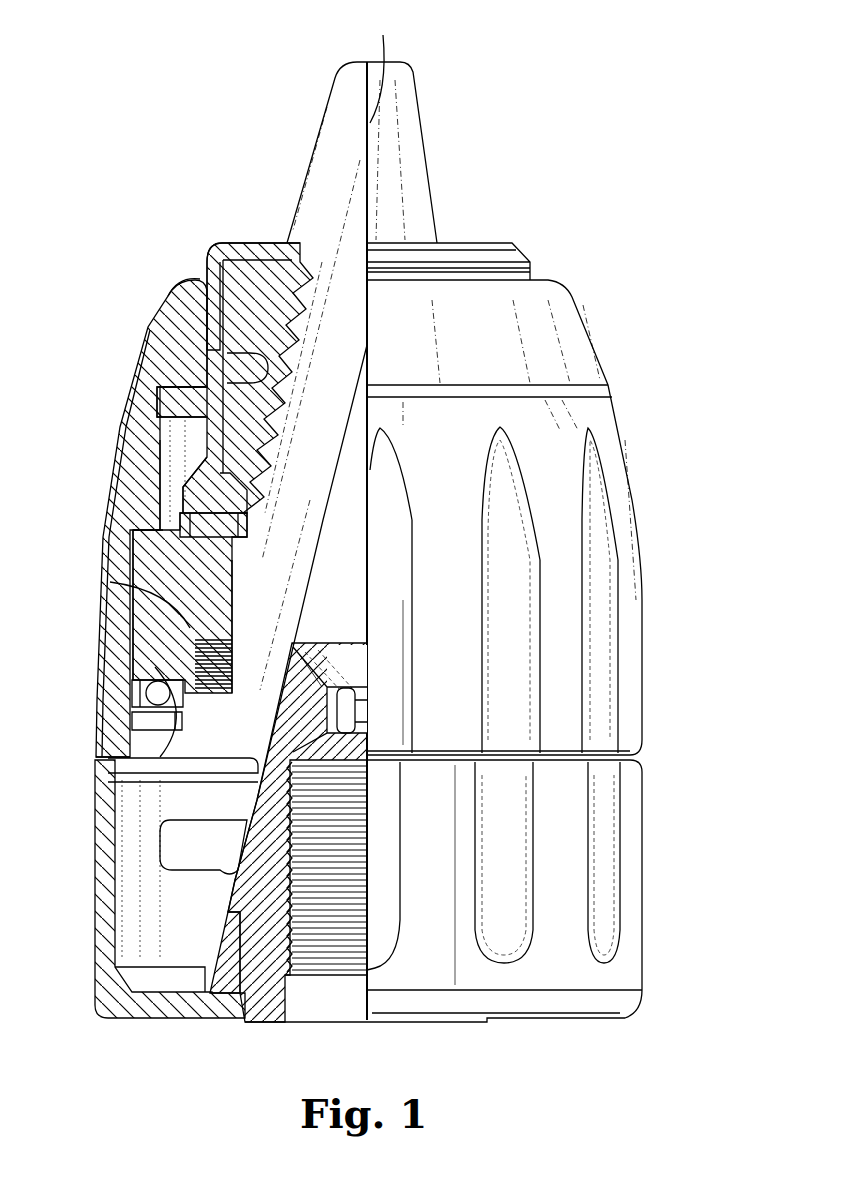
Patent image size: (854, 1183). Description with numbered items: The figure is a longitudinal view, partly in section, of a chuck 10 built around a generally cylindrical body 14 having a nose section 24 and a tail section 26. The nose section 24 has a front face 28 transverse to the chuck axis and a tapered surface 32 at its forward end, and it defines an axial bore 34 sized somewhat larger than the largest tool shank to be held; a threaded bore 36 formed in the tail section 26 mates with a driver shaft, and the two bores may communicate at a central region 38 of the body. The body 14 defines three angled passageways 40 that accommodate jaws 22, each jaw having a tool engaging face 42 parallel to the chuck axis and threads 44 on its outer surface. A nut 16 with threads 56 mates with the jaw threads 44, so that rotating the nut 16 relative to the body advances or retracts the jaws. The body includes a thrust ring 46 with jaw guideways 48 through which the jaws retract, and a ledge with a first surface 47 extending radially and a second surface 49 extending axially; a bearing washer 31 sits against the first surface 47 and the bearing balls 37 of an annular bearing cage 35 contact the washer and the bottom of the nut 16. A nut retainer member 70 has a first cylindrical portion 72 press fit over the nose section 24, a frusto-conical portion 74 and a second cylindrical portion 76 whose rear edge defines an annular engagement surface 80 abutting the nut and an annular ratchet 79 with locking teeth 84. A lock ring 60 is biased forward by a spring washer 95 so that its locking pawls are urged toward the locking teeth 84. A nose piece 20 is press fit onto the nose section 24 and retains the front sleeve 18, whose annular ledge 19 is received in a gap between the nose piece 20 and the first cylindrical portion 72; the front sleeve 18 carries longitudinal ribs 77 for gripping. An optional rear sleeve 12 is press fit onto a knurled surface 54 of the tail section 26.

The chuck 10 is at (658, 262).
The rear sleeve 12 is at (645, 972).
The body 14 is at (255, 790).
The nut 16 is at (127, 585).
The front sleeve 18 is at (628, 440).
The annular ledge 19 is at (205, 325).
The nose piece 20 is at (532, 252).
The jaws 22 is at (428, 86).
The nose section 24 is at (178, 292).
The tail section 26 is at (247, 1022).
The front face 28 is at (263, 262).
The bearing washer 31 is at (147, 723).
The tapered surface 32 is at (220, 262).
The axial bore 34 is at (354, 574).
The bearing cage 35 is at (130, 685).
The threaded bore 36 is at (332, 988).
The bearing balls 37 is at (127, 680).
The central region 38 is at (346, 686).
The passageways 40 is at (250, 372).
The tool engaging face 42 is at (380, 64).
The threads 44 is at (262, 430).
The thrust ring 46 is at (147, 745).
The first surface 47 is at (130, 708).
The jaw guideways 48 is at (140, 782).
The second surface 49 is at (185, 720).
The knurled surface 54 is at (212, 977).
The threads 56 is at (187, 630).
The lock ring 60 is at (163, 597).
The nut retainer member 70 is at (200, 432).
The first cylindrical portion 72 is at (247, 442).
The frusto-conical portion 74 is at (200, 502).
The second cylindrical portion 76 is at (160, 518).
The longitudinal ribs 77 is at (607, 655).
The annular ratchet 79 is at (607, 832).
The annular engagement surface 80 is at (245, 548).
The locking teeth 84 is at (130, 567).
The spring washer 95 is at (170, 610).